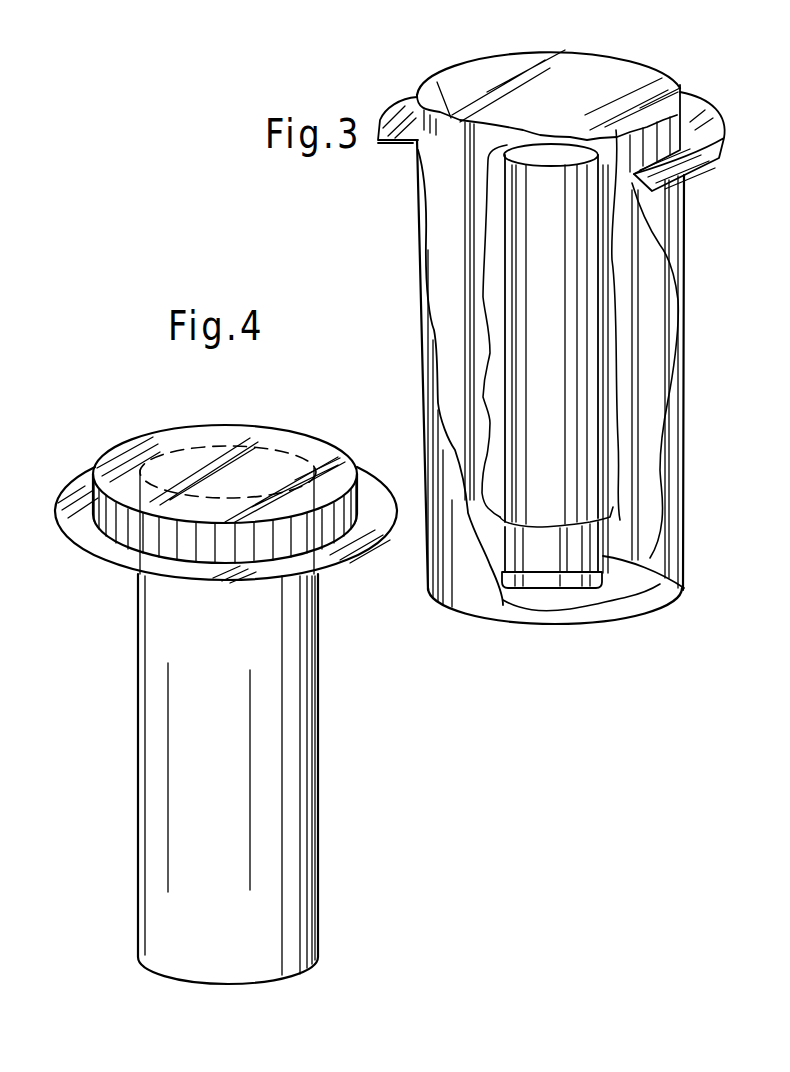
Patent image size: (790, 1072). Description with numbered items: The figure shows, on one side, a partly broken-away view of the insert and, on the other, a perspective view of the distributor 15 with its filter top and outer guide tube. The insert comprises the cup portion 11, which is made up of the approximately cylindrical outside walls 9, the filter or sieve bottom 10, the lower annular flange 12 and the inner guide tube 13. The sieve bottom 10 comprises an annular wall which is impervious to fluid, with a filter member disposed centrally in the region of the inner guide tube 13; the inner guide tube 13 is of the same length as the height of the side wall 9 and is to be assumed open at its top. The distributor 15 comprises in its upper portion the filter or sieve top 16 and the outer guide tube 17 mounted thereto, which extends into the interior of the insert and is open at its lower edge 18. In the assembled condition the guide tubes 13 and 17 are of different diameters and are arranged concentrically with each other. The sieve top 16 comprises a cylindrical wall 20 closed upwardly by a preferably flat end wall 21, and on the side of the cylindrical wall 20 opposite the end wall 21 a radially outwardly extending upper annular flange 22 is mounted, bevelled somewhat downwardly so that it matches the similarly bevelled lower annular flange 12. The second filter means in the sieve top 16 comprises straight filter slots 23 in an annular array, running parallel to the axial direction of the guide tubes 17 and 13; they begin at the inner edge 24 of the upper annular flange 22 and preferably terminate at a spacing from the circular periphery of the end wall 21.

In FIG. 3, the outside walls 9 is at (675, 448).
In FIG. 3, the sieve bottom 10 is at (508, 604).
In FIG. 3, the cup portion 11 is at (668, 590).
In FIG. 3, the lower annular flange 12 is at (406, 146).
In FIG. 3, the inner guide tube 13 is at (562, 300).
In FIG. 4, the distributor 15 is at (128, 755).
In FIG. 3, the sieve top 16 is at (660, 70).
In FIG. 4, the sieve top 16 is at (341, 446).
In FIG. 3, the outer guide tube 17 is at (613, 555).
In FIG. 4, the outer guide tube 17 is at (305, 808).
In FIG. 3, the lower edge 18 is at (609, 575).
In FIG. 3, the cylindrical wall 20 is at (672, 130).
In FIG. 4, the cylindrical wall 20 is at (110, 524).
In FIG. 3, the end wall 21 is at (437, 82).
In FIG. 4, the end wall 21 is at (262, 432).
In FIG. 3, the upper annular flange 22 is at (705, 150).
In FIG. 4, the upper annular flange 22 is at (378, 490).
In FIG. 3, the filter slots 23 is at (660, 152).
In FIG. 4, the filter slots 23 is at (340, 516).
In FIG. 4, the inner edge 24 is at (130, 552).